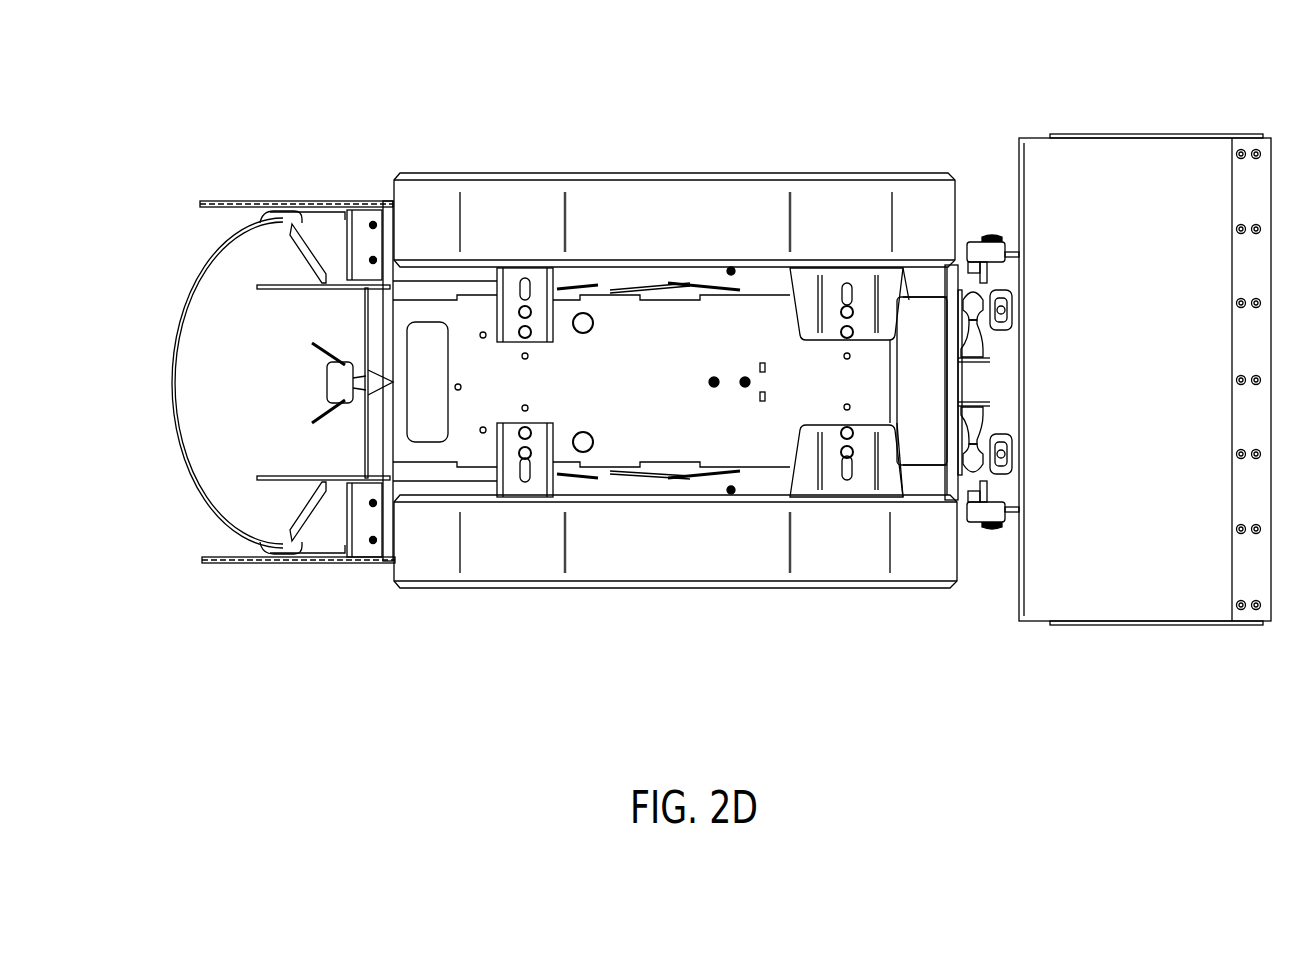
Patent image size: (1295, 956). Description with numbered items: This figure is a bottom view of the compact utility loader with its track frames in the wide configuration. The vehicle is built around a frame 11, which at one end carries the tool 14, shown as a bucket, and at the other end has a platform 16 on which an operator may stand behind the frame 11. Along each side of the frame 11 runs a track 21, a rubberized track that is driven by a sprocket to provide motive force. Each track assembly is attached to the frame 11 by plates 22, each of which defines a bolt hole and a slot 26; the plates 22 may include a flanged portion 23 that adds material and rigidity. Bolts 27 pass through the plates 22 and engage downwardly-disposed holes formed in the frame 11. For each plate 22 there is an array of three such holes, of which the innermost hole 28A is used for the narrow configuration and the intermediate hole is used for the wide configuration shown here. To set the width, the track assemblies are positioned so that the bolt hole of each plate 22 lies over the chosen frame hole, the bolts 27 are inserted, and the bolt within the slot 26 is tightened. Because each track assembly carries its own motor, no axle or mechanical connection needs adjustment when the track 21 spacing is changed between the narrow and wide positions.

The frame 11 is at (706, 321).
The tool 14 is at (1144, 336).
The platform 16 is at (261, 397).
The track 21 is at (675, 422).
The plate 22 is at (874, 492).
The flanged portion 23 is at (957, 478).
The slot 26 is at (490, 539).
The bolt 27 is at (805, 554).
The innermost hole 28A is at (449, 234).